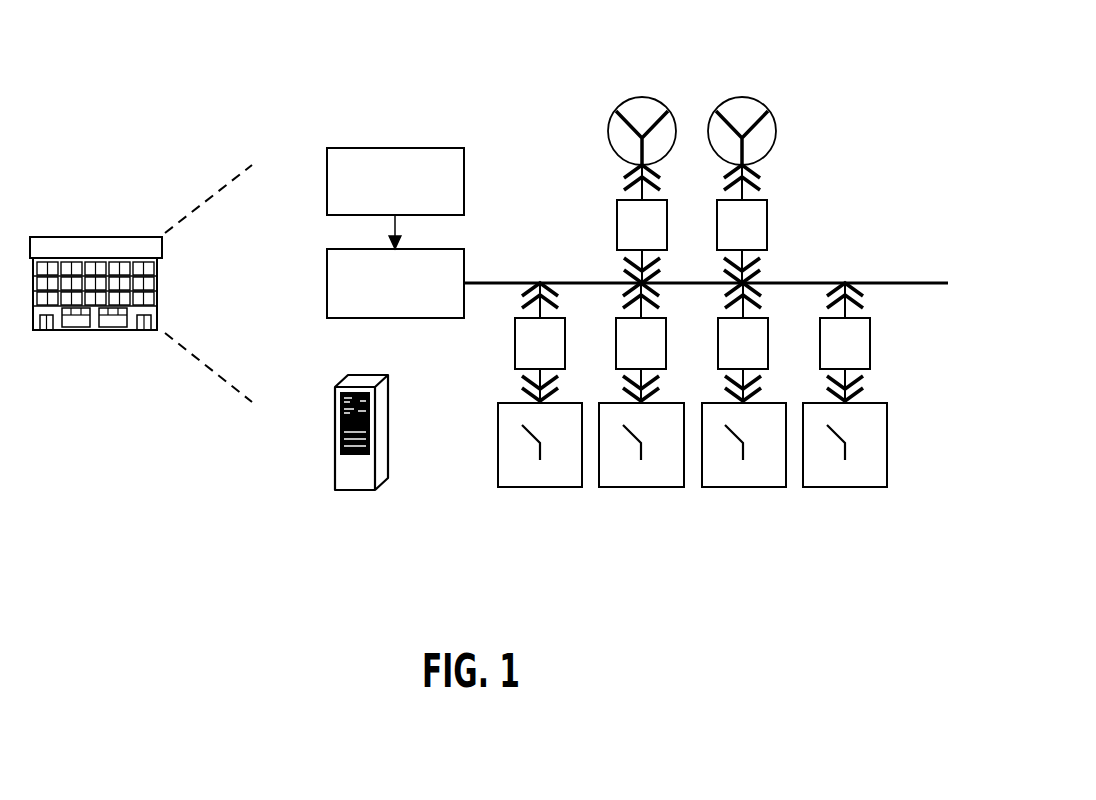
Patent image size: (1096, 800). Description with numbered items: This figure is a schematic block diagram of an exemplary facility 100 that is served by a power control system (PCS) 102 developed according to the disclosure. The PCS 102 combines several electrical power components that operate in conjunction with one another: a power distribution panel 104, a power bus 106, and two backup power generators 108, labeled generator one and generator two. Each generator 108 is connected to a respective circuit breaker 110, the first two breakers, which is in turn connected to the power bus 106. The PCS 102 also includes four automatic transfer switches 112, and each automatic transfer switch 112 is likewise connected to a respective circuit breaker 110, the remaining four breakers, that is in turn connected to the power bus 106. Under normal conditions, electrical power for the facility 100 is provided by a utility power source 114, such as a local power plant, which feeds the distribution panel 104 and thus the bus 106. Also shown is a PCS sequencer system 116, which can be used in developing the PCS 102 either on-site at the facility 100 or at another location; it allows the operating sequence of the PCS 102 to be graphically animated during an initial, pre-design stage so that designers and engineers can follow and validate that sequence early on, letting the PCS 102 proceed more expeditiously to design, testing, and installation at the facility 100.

The facility 100 is at (98, 237).
The power control system 102 is at (471, 72).
The power distribution panel 104 is at (327, 287).
The power bus 106 is at (508, 282).
The backup power generator 108 is at (608, 133).
The circuit breaker 110 is at (617, 243).
The automatic transfer switch 112 is at (498, 448).
The utility power source 114 is at (327, 185).
The PCS sequencer system 116 is at (335, 433).